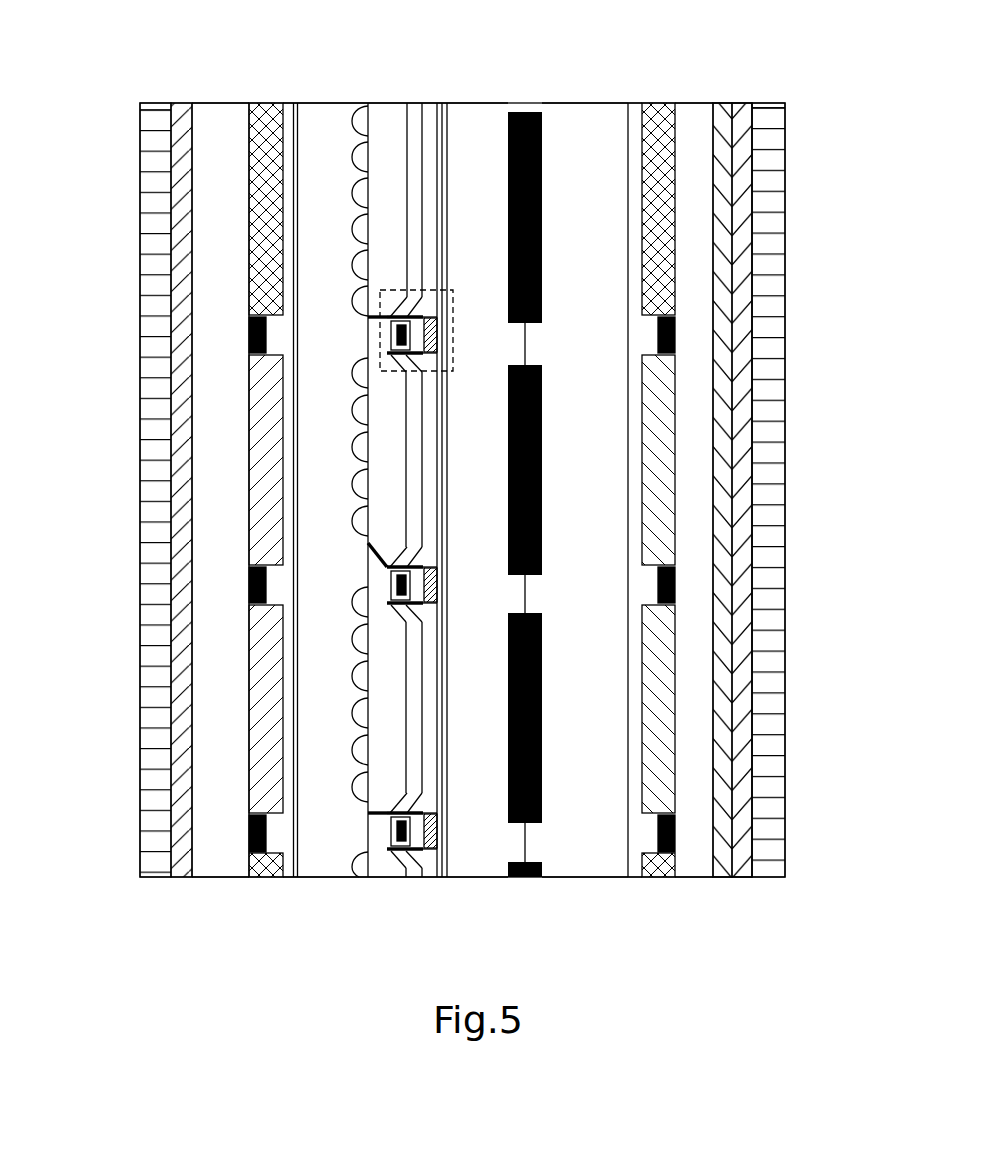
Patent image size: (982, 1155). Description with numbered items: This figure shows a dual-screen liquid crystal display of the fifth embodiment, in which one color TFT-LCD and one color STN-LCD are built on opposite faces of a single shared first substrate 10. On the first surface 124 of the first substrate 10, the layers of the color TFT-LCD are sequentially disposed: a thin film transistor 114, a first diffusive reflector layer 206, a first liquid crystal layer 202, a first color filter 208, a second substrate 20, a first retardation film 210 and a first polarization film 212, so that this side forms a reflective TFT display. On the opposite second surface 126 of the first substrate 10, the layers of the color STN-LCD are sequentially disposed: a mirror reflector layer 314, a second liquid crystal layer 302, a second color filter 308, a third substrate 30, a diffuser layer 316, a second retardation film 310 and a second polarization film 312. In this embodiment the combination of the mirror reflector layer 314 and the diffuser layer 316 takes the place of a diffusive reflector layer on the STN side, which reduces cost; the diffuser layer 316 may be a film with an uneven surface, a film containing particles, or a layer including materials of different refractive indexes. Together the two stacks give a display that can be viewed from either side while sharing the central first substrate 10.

The first substrate 10 is at (462, 462).
The second substrate 20 is at (220, 113).
The third substrate 30 is at (692, 112).
The thin film transistor 114 is at (432, 290).
The first surface 124 is at (472, 118).
The second surface 126 is at (520, 108).
The first liquid crystal layer 202 is at (330, 120).
The first diffusive reflector layer 206 is at (365, 870).
The first color filter 208 is at (277, 867).
The first retardation film 210 is at (183, 103).
The first polarization film 212 is at (148, 467).
The second liquid crystal layer 302 is at (587, 110).
The second color filter 308 is at (657, 879).
The second retardation film 310 is at (737, 103).
The second polarization film 312 is at (772, 470).
The mirror reflector layer 314 is at (523, 879).
The diffuser layer 316 is at (727, 867).